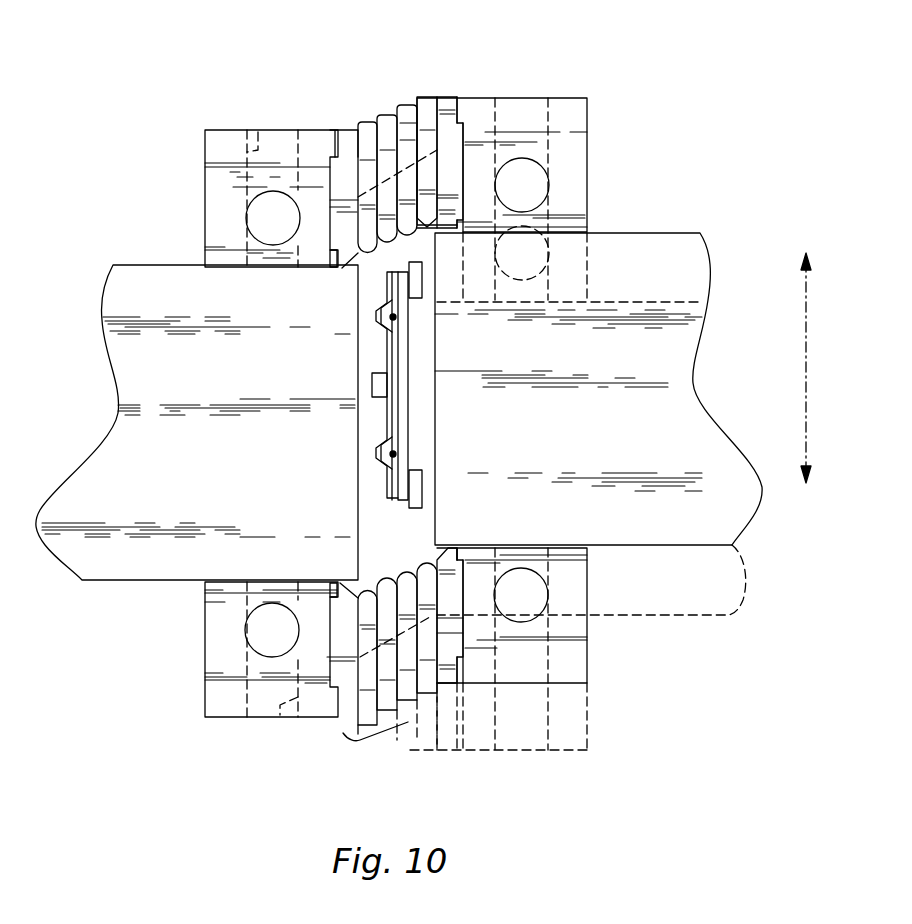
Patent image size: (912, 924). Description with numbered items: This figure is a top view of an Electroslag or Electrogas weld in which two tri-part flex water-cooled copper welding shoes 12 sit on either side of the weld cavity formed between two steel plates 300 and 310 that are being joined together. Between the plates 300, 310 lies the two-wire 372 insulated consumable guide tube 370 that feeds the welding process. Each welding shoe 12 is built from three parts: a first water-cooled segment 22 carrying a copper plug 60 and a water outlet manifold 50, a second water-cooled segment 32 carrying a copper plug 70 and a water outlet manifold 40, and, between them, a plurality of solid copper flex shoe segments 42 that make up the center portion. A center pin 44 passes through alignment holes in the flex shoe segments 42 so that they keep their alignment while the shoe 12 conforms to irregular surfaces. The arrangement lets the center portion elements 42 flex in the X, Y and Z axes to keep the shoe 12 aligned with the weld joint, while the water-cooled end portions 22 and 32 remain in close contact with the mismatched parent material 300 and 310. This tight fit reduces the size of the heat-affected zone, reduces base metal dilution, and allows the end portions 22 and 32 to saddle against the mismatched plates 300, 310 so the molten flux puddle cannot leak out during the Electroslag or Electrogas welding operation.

The tri-part flex water-cooled copper Electroslag or Electrogas welding shoe 12 is at (273, 67).
The first water-cooled segment 22 is at (225, 150).
The second water-cooled segment 32 is at (568, 110).
The water outlet manifold 40 is at (547, 130).
The solid copper flex shoe segments 42 is at (443, 63).
The center pin 44 is at (410, 160).
The water outlet manifold 50 is at (258, 130).
The copper plug 60 is at (267, 240).
The copper plug 70 is at (533, 160).
The steel plate 300 is at (143, 431).
The steel plate 310 is at (693, 383).
The consumable guide tube 370 is at (395, 358).
The two-wire 372 is at (385, 295).